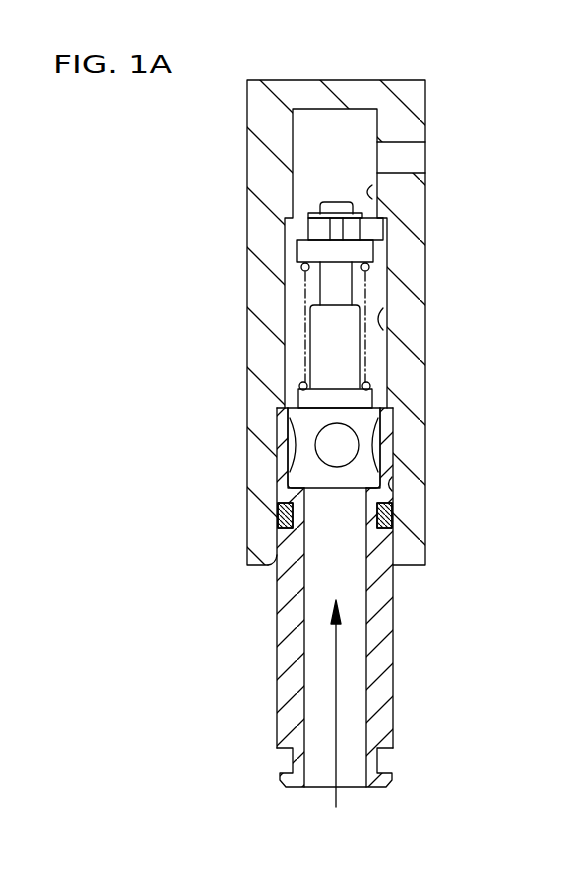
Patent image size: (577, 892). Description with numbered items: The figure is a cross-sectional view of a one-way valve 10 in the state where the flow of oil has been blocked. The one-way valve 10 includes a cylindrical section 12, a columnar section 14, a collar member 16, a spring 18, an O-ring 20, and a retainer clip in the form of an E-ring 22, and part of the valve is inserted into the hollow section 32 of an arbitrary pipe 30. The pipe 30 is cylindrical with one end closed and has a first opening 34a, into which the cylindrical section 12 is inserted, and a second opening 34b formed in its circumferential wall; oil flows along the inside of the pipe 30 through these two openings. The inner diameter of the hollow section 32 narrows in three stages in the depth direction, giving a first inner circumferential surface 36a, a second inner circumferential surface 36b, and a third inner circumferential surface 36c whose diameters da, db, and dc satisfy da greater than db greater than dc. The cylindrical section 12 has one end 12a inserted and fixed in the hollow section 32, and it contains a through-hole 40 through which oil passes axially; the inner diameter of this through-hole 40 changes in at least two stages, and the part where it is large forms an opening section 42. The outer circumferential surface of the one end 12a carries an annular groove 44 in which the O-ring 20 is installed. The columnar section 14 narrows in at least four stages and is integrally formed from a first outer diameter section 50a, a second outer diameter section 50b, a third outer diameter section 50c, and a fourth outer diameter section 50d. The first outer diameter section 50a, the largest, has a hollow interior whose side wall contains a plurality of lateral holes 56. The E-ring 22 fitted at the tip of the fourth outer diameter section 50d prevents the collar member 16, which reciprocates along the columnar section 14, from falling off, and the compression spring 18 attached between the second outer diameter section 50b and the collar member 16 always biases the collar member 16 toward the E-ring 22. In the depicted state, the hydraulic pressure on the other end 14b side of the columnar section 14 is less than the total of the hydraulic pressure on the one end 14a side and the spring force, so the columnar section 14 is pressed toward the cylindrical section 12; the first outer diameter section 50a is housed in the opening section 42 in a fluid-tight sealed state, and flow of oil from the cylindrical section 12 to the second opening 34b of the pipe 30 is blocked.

The one-way valve 10 is at (104, 152).
The cylindrical section 12 is at (391, 617).
The one end of the cylindrical section 12a is at (394, 412).
The columnar section 14 is at (340, 379).
The one end of the columnar section 14a is at (335, 202).
The another end of the columnar section 14b is at (335, 490).
The collar member 16 is at (386, 233).
The spring 18 is at (372, 292).
The O-ring 20 is at (388, 515).
The E-ring 22 is at (313, 216).
The pipe 30 is at (428, 92).
The hollow section 32 is at (360, 123).
The first opening 34a is at (272, 567).
The second opening 34b is at (412, 152).
The first inner circumferential surface 36a is at (392, 483).
The second inner circumferential surface 36b is at (381, 318).
The third inner circumferential surface 36c is at (372, 190).
The through-hole 40 is at (350, 678).
The opening section 42 is at (300, 478).
The annular groove 44 is at (377, 758).
The first outer diameter section 50a is at (305, 440).
The second outer diameter section 50b is at (310, 400).
The third outer diameter section 50c is at (330, 343).
The fourth outer diameter section 50d is at (325, 290).
The lateral holes 56 is at (345, 445).